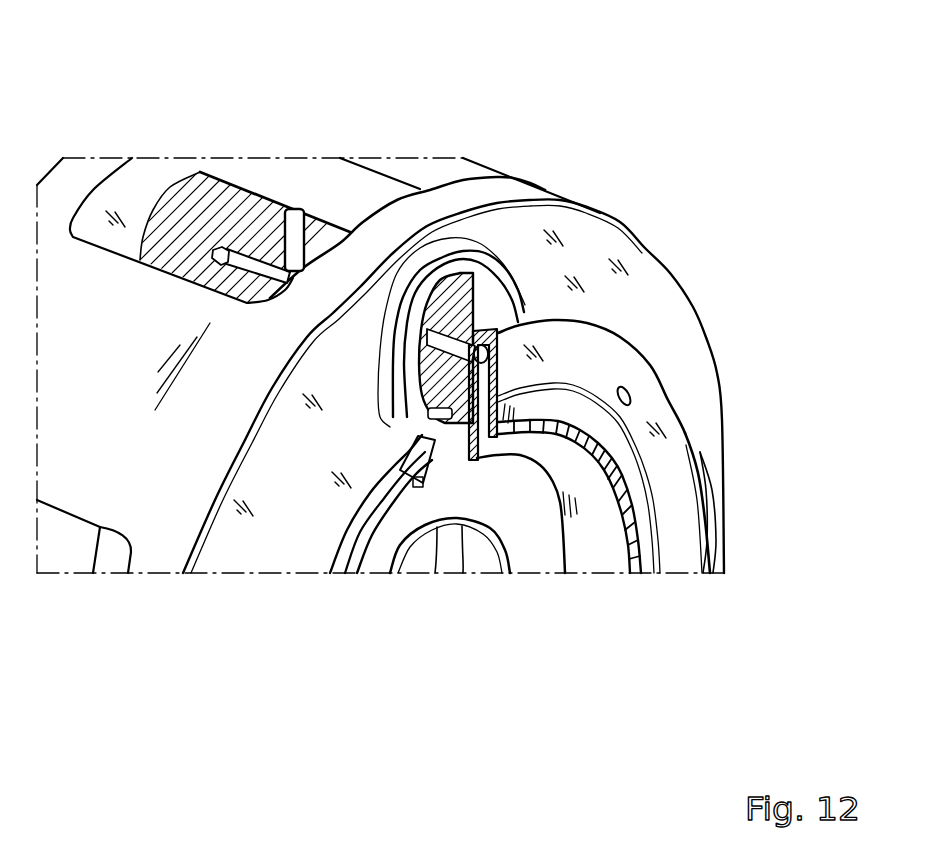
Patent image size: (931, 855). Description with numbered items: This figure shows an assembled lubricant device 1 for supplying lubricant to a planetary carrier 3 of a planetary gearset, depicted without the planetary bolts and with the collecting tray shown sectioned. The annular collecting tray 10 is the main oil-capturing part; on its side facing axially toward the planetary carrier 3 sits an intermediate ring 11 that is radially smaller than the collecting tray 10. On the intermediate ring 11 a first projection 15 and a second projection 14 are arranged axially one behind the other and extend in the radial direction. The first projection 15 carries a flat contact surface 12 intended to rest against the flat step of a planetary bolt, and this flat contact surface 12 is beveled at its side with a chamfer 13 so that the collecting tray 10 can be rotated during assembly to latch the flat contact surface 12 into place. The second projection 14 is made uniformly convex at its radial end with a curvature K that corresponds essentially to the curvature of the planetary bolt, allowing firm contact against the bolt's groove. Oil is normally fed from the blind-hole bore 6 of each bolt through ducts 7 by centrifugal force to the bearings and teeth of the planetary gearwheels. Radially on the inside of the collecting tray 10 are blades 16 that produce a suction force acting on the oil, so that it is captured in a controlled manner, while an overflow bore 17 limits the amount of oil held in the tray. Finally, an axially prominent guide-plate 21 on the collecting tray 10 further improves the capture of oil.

The lubricant device 1 is at (333, 118).
The planetary carrier 3 is at (427, 173).
The blind-hole bore 6 is at (257, 271).
The ducts 7 is at (295, 230).
The curvature K is at (436, 402).
The collecting tray 10 is at (660, 413).
The intermediate ring 11 is at (343, 550).
The flat contact surface 12 is at (462, 432).
The chamfer 13 is at (577, 387).
The second projection 14 is at (398, 457).
The first projection 15 is at (447, 472).
The blades 16 is at (637, 484).
The overflow bore 17 is at (638, 384).
The guide-plate 21 is at (537, 407).